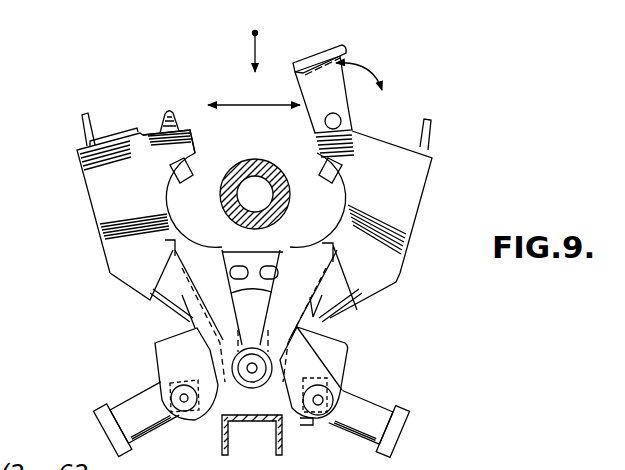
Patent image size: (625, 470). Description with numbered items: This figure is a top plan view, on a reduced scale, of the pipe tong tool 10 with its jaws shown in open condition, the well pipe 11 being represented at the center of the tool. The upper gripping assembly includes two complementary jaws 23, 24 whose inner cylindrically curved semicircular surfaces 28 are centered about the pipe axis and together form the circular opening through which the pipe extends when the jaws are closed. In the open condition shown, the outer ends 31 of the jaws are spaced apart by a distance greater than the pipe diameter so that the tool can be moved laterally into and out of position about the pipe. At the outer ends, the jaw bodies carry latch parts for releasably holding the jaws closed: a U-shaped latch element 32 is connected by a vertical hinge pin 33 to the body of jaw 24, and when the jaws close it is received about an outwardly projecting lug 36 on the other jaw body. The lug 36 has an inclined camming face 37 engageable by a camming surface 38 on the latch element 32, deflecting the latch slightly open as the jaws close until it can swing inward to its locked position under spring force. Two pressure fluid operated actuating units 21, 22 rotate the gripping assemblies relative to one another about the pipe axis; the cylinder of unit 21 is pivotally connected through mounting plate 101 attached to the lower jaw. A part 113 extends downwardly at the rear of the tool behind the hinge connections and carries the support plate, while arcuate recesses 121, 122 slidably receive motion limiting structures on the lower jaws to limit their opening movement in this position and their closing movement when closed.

The gripping apparatus 10 is at (252, 57).
The well pipe 11 is at (290, 134).
The pressure fluid operated actuating unit 21 is at (137, 389).
The pressure fluid operated actuating unit 22 is at (378, 392).
The jaw 23 is at (102, 238).
The jaw 24 is at (423, 198).
The semicircular surface 28 is at (165, 192).
The outer end of jaw 31 is at (196, 142).
The latch element 32 is at (343, 102).
The hinge pin 33 is at (337, 122).
The lug 36 is at (158, 122).
The inclined camming face 37 is at (172, 112).
The camming surface 38 is at (295, 67).
The mounting plate 101 is at (168, 345).
The part 113 is at (283, 440).
The arcuate recess 121 is at (225, 278).
The arcuate recess 122 is at (284, 278).